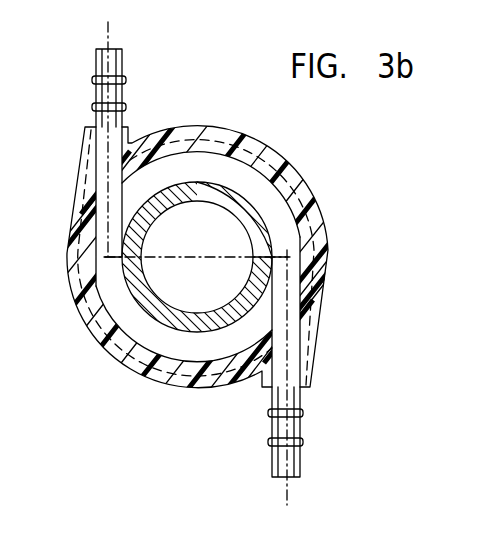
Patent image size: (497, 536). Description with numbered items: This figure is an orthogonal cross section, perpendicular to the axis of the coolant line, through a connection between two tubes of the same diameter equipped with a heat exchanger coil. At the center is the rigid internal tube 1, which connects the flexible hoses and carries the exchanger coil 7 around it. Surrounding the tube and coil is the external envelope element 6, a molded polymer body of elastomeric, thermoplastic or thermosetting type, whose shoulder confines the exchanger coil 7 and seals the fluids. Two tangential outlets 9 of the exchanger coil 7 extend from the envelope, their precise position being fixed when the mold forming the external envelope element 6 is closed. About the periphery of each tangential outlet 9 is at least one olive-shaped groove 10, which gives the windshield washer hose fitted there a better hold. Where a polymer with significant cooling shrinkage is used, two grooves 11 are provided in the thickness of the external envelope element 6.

The rigid internal tube 1 is at (147, 306).
The external envelope element 6 is at (329, 277).
The exchanger coil 7 is at (194, 165).
The tangential outlet 9 is at (100, 89).
The olive-shaped groove 10 is at (297, 413).
The groove 11 is at (158, 380).